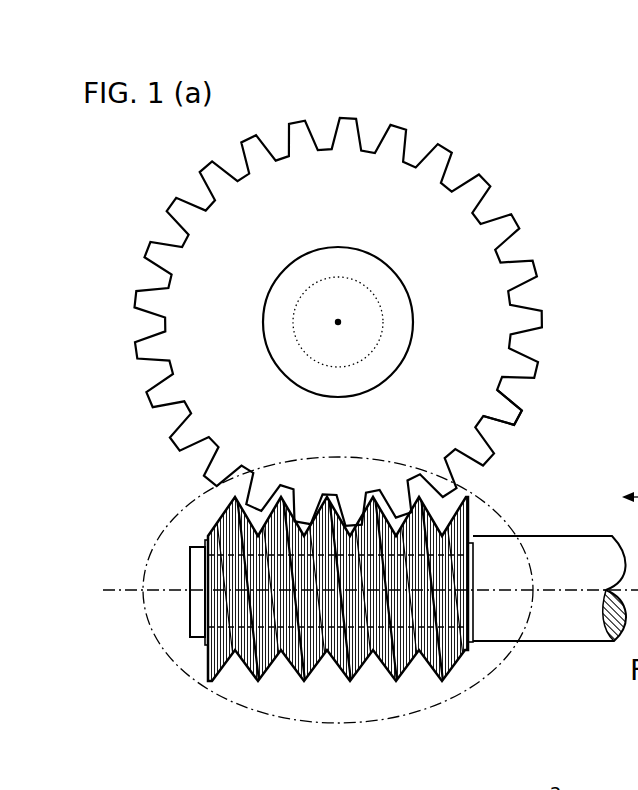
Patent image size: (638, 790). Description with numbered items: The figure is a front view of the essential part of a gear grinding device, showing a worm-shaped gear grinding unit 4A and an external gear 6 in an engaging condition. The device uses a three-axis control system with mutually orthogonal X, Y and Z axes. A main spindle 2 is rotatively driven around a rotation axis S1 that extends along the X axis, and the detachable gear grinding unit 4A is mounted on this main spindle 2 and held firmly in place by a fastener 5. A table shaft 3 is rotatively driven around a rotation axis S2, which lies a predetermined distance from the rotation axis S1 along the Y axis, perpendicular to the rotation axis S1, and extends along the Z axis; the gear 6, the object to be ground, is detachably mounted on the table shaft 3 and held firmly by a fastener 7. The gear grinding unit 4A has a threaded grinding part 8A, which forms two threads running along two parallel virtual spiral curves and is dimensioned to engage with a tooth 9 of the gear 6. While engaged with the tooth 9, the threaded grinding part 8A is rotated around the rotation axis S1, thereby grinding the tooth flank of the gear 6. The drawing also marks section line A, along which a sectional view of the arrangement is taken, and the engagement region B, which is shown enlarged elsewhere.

The external gear 6 is at (518, 225).
The tooth 9 is at (503, 396).
The fastener 7 is at (272, 277).
The table shaft 3 is at (365, 283).
The rotation axis S2 is at (341, 325).
The rotation axis S1 is at (108, 592).
The part B is at (505, 508).
The line A- A is at (330, 84).
The gear grinding unit 4A is at (247, 681).
The threaded grinding part 8A is at (362, 665).
The fastener 5 is at (192, 554).
The main spindle 2 is at (573, 535).